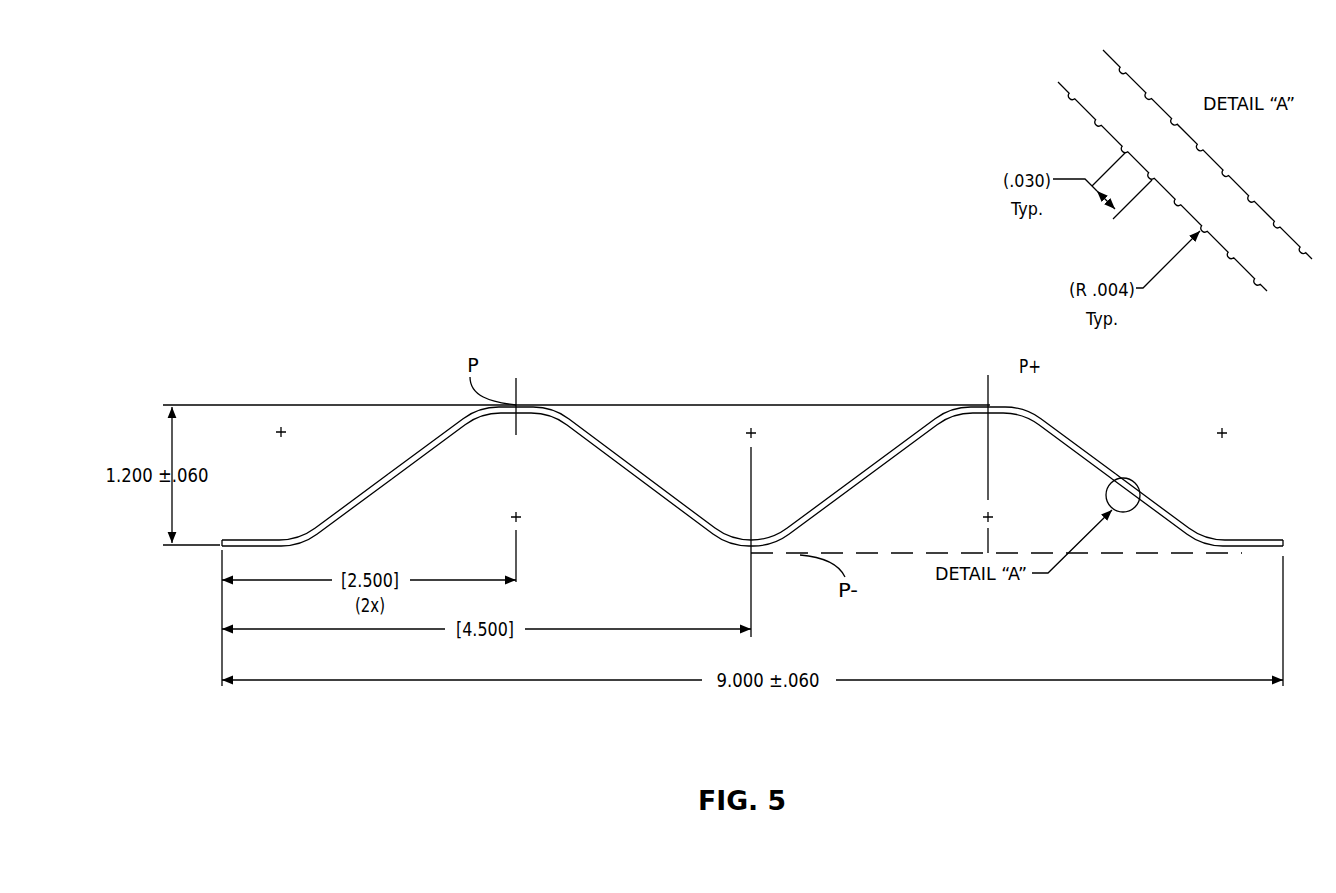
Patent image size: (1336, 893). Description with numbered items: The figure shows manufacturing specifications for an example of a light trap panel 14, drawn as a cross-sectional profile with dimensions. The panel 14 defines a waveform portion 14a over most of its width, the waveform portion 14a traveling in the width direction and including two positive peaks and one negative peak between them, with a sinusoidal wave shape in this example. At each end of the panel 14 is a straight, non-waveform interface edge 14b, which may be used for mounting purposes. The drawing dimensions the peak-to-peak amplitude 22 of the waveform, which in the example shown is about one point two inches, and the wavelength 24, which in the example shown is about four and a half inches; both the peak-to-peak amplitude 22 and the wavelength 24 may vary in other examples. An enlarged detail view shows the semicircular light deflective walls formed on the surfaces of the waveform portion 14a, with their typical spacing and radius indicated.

The panel 14 is at (760, 410).
The waveform portion 14a is at (656, 370).
The interface edge 14b is at (298, 542).
The peak-to-peak amplitude 22 is at (990, 482).
The wavelength 24 is at (827, 405).